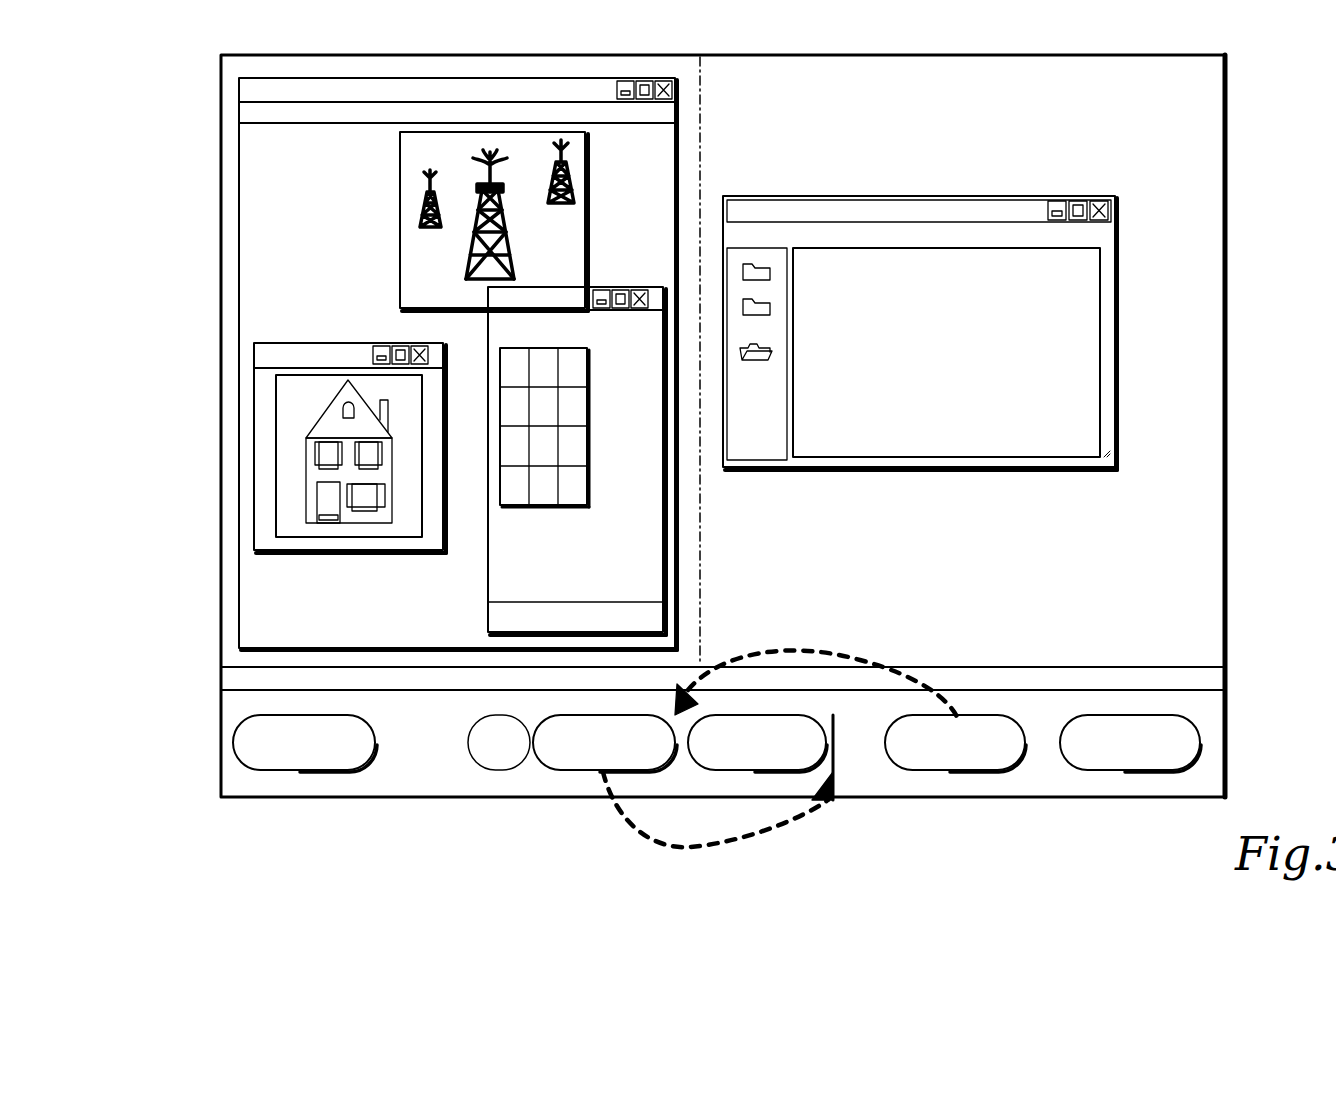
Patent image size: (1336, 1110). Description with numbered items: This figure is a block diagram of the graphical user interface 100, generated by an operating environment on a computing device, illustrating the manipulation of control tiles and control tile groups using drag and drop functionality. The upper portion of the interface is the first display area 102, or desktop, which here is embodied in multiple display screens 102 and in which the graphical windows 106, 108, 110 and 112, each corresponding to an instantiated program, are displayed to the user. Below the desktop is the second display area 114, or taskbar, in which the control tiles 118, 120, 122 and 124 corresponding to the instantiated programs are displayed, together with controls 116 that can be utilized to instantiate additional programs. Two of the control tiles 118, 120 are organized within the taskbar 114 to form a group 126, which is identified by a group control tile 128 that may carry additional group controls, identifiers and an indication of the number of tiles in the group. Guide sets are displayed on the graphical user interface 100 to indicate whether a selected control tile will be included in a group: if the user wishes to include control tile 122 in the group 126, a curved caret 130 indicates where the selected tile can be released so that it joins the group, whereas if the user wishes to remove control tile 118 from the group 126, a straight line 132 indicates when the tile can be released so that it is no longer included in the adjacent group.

The graphical user interface 100 is at (1252, 110).
The first display area 102 is at (228, 64).
The graphical window 106 is at (458, 364).
The graphical window 108 is at (345, 556).
The graphical window 110 is at (577, 461).
The graphical window 112 is at (920, 333).
The second display area 114 is at (1242, 700).
The controls 116 is at (305, 743).
The control tile 118 is at (605, 743).
The control tile 120 is at (757, 743).
The control tile 122 is at (955, 743).
The control tile 124 is at (1130, 743).
The group 126 is at (578, 770).
The group control tile 128 is at (497, 743).
The curved caret 130 is at (692, 764).
The straight line 132 is at (848, 750).